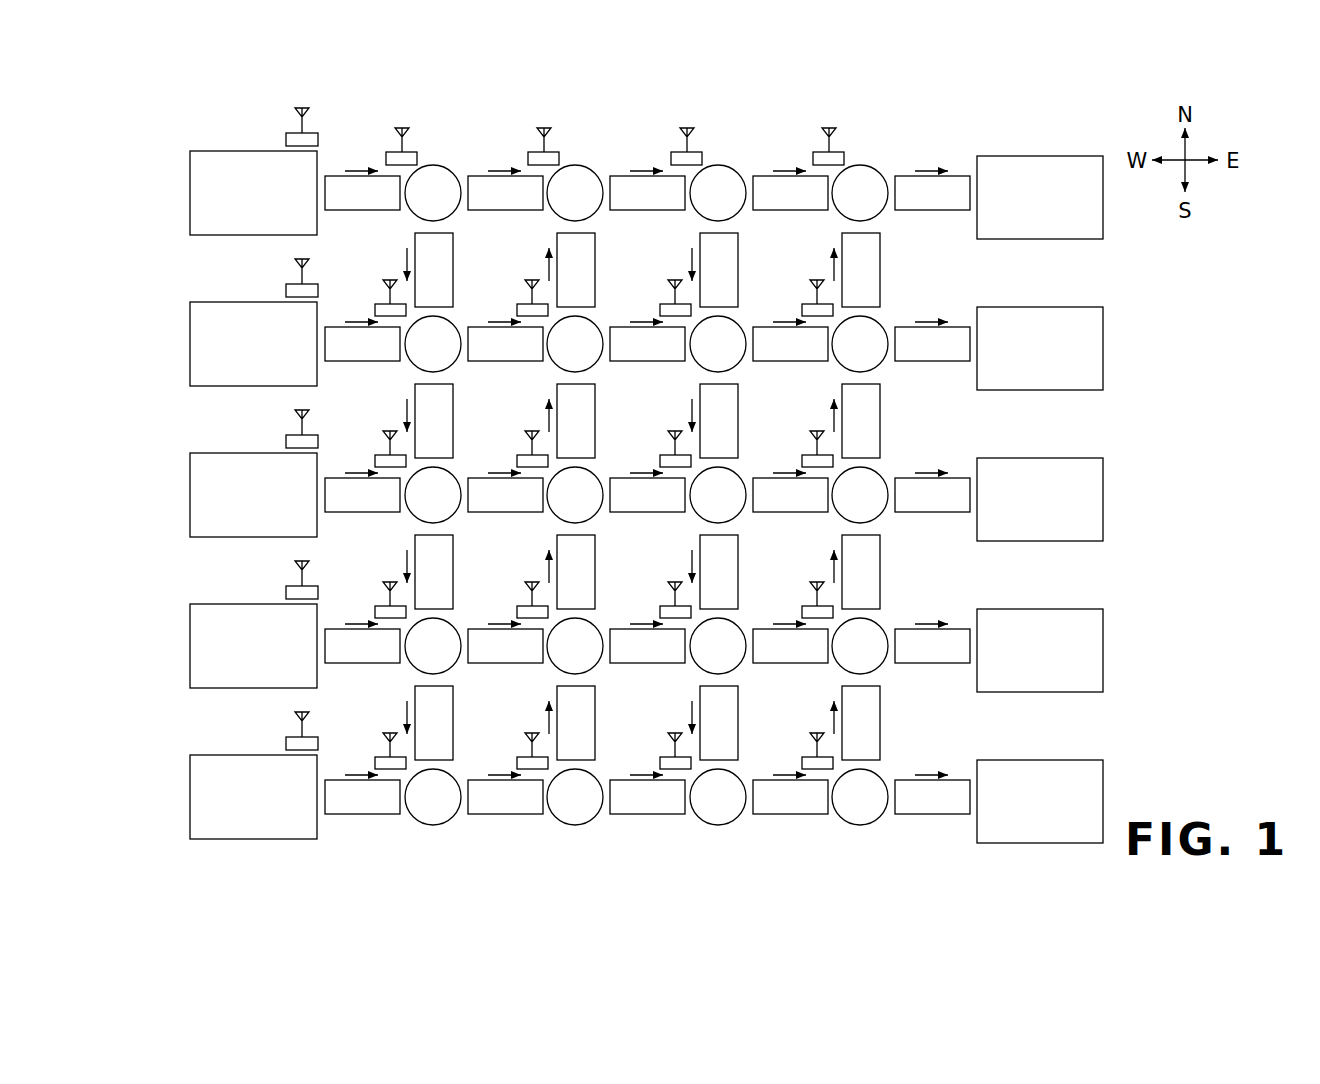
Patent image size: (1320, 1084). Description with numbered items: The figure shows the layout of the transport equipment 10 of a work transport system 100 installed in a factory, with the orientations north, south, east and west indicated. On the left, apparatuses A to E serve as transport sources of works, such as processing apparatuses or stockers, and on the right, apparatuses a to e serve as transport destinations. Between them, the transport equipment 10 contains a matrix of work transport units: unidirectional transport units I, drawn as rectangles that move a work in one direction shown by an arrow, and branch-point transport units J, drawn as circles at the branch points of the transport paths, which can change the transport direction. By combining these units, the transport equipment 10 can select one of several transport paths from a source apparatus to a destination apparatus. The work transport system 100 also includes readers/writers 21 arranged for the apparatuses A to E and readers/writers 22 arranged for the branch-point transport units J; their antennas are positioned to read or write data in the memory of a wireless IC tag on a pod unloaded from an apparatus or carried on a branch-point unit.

The work transport system 100 is at (160, 138).
The transport equipment 10 is at (897, 135).
The reader/writer 21 is at (290, 133).
The reader/writer 22 is at (415, 152).